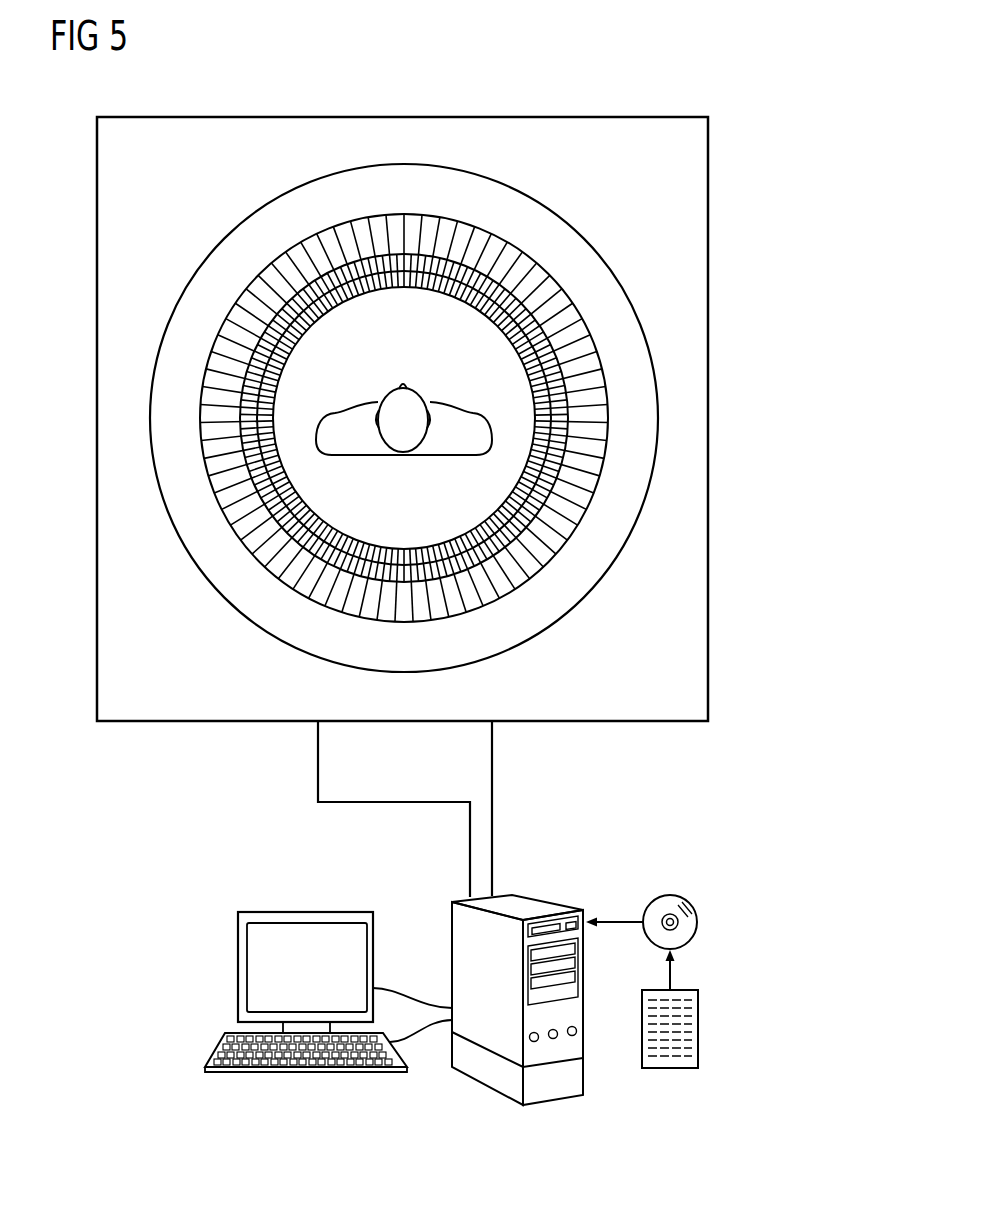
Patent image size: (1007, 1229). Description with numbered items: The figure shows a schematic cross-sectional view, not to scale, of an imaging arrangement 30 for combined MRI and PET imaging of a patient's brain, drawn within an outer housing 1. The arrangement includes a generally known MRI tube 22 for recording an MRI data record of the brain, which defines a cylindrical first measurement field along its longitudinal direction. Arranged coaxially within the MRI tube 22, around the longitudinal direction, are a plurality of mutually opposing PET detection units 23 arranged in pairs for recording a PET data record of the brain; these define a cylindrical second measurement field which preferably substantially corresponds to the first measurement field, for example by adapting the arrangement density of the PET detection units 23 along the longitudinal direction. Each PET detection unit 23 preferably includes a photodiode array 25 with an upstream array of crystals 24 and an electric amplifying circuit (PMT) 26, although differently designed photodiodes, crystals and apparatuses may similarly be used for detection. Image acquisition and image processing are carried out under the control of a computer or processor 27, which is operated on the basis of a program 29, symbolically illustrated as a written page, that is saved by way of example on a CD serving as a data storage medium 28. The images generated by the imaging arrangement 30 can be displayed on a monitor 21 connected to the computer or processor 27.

The magnetic resonance apparatus / scanner housing 1 is at (287, 116).
The imaging arrangement 30 is at (612, 97).
The MRI tube 22 is at (655, 365).
The electric amplifying circuit (PMT) 26 is at (313, 247).
The photodiode array 25 is at (385, 268).
The array of crystals 24 is at (535, 370).
The PET detection units 23 is at (403, 540).
The monitor 21 is at (290, 912).
The computer or processor 27 is at (530, 905).
The data storage medium 28 is at (672, 892).
The program 29 is at (700, 1012).